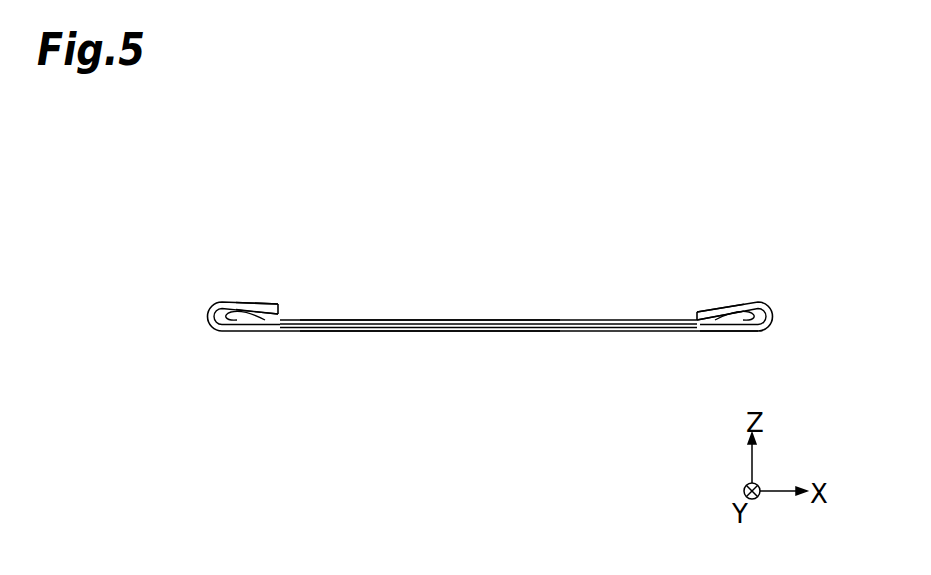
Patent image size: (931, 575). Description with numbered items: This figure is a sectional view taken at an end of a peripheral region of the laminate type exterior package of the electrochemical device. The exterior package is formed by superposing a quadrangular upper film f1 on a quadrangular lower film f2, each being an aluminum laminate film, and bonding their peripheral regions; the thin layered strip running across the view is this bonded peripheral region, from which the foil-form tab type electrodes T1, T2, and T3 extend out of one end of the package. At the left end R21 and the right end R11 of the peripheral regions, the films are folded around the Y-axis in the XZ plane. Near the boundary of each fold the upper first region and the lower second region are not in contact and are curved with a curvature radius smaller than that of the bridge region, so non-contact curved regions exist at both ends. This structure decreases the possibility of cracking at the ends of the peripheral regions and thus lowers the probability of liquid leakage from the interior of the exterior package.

The end of peripheral region R21 is at (223, 299).
The end of peripheral region R11 is at (748, 308).
The upper film f1 is at (424, 320).
The lower film f2 is at (422, 331).
The tab type electrode T1 is at (365, 328).
The tab type electrode T2 is at (617, 331).
The tab type electrode T3 is at (488, 328).